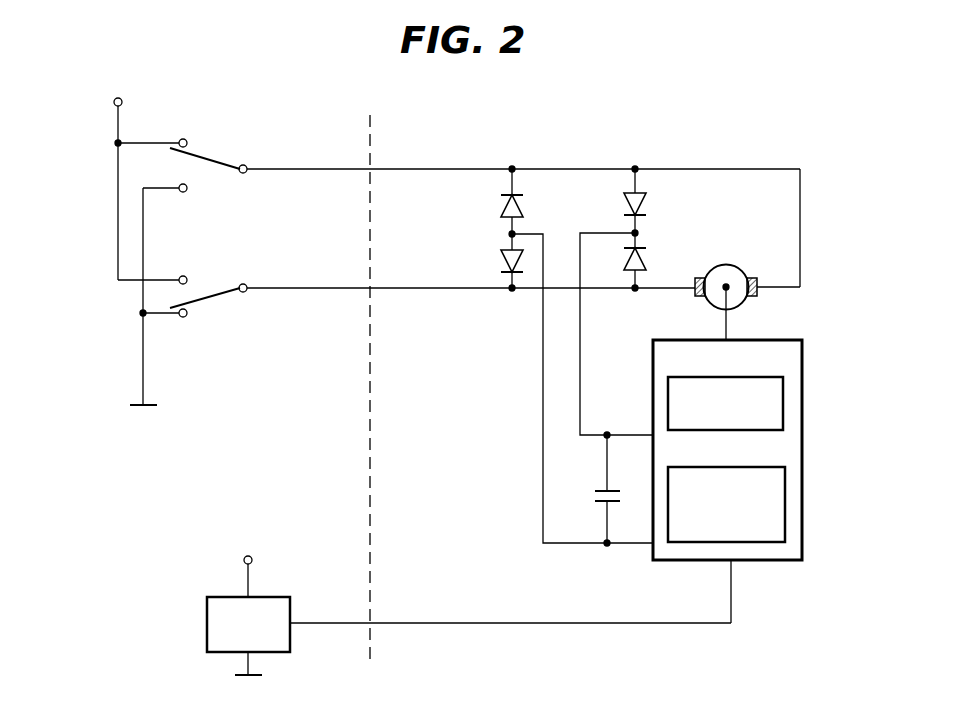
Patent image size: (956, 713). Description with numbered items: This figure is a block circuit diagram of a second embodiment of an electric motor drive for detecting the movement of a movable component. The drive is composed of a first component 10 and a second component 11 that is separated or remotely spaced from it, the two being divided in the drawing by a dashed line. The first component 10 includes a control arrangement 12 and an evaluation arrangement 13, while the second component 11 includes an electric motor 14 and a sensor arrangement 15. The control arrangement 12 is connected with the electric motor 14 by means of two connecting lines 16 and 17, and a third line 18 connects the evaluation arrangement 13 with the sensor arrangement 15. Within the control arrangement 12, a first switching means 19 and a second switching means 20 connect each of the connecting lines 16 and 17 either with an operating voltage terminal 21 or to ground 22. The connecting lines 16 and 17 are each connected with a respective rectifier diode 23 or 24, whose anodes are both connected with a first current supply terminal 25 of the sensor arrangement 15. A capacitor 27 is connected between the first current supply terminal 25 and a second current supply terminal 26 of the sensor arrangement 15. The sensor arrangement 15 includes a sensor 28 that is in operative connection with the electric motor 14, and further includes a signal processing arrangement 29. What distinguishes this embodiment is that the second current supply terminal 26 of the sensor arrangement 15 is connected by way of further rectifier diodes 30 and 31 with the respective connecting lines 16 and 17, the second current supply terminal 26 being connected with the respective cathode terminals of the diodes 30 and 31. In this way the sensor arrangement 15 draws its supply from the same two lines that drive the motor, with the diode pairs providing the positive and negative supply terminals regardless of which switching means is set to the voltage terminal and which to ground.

The first component 10 is at (331, 150).
The second component 11 is at (611, 148).
The control arrangement 12 is at (254, 240).
The evaluation arrangement 13 is at (277, 597).
The electric motor 14 is at (726, 265).
The sensor arrangement 15 is at (762, 340).
The connecting line 16 is at (387, 169).
The connecting line 17 is at (387, 288).
The third line 18 is at (425, 623).
The first switching means 19 is at (200, 158).
The second switching means 20 is at (210, 300).
The operating voltage terminal 21 is at (113, 102).
The ground 22 is at (147, 407).
The rectifier diode 23 is at (501, 206).
The rectifier diode 24 is at (501, 256).
The first current supply terminal 25 is at (635, 545).
The second current supply terminal 26 is at (625, 435).
The capacitor 27 is at (592, 495).
The sensor 28 is at (742, 377).
The signal processing arrangement 29 is at (743, 467).
The further rectifier diode 30 is at (647, 208).
The further rectifier diode 31 is at (647, 255).